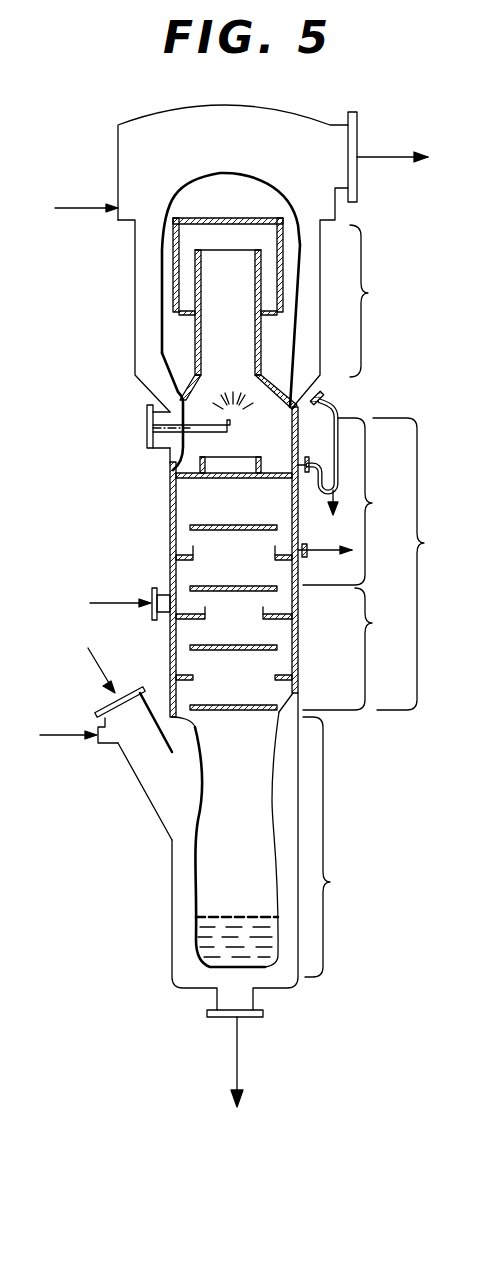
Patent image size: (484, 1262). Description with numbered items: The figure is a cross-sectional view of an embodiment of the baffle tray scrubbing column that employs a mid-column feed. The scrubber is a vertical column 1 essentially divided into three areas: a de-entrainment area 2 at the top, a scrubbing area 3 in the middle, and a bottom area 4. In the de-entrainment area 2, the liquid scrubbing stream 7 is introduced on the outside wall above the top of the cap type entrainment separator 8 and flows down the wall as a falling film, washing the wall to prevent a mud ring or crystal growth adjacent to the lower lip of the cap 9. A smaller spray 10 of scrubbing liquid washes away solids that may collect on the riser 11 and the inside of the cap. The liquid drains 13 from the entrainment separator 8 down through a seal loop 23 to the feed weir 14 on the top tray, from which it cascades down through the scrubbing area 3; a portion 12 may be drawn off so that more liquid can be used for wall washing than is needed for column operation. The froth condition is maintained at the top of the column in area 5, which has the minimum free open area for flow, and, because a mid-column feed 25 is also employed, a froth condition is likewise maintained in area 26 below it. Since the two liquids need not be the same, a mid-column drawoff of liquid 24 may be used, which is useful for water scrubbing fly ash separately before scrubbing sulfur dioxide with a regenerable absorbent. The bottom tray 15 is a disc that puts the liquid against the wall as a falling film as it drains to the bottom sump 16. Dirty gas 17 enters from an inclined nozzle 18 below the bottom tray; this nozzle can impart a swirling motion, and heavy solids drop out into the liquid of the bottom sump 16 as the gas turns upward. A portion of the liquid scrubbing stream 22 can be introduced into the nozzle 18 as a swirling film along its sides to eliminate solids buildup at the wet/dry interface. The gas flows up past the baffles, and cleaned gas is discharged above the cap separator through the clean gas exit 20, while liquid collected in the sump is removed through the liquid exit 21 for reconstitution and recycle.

The vertical column 1 is at (170, 525).
The de-entrainment area 2 is at (364, 301).
The scrubbing area 3 is at (407, 564).
The bottom area 4 is at (327, 847).
The top portion of scrubbing area 5 is at (346, 501).
The liquid scrubbing stream 7 is at (80, 206).
The cap type entrainment separator 8 is at (173, 262).
The lower lip of the cap 9 is at (172, 315).
The smaller spray 10 is at (207, 428).
The riser 11 is at (262, 340).
The drawn-off portion 12 is at (328, 497).
The liquid scrubbing stream drain 13 is at (322, 395).
The feed weir 14 is at (267, 480).
The bottom tray 15 is at (232, 712).
The bottom sump 16 is at (237, 937).
The dirty gas 17 is at (103, 661).
The inclined nozzle 18 is at (128, 783).
The clean gas exit 20 is at (380, 157).
The liquid exit 21 is at (238, 1055).
The portion of liquid scrubbing stream 22 is at (65, 717).
The seal loop 23 is at (340, 455).
The mid-column drawoff of liquid 24 is at (320, 553).
The mid-column feed 25 is at (117, 602).
The lower froth area 26 is at (354, 649).